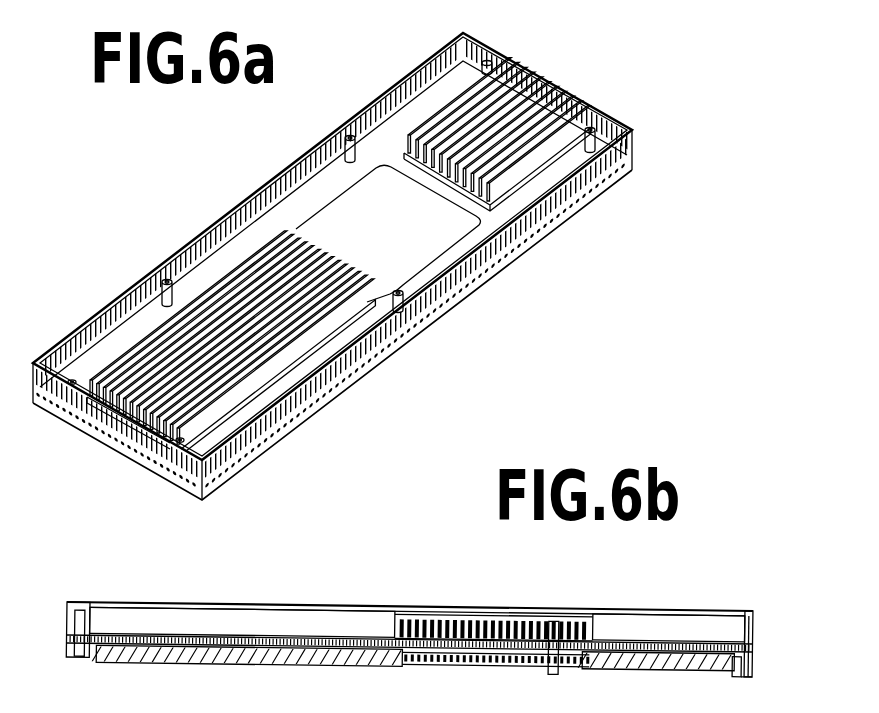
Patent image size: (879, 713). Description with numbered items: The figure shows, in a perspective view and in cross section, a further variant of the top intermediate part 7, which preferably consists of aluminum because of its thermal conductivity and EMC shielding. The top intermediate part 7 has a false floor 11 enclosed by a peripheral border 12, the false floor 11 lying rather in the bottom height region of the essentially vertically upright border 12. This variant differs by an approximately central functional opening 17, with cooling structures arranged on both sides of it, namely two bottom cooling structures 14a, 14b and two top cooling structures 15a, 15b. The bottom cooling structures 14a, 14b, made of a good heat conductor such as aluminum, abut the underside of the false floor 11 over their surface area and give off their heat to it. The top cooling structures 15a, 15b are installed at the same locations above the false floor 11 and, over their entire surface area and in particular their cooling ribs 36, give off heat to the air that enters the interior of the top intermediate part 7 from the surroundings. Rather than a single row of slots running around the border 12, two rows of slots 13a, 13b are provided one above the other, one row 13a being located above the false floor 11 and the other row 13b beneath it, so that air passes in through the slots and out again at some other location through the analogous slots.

In FIG. 6A, the top intermediate part 7 is at (652, 173).
In FIG. 6B, the top intermediate part 7 is at (730, 598).
In FIG. 6A, the false floor 11 is at (330, 348).
In FIG. 6B, the false floor 11 is at (428, 637).
In FIG. 6A, the peripheral border 12 is at (33, 404).
In FIG. 6A, the upper row of slots 13a is at (362, 122).
In FIG. 6B, the upper row of slots 13a is at (483, 620).
In FIG. 6A, the lower row of slots 13b is at (437, 316).
In FIG. 6B, the lower row of slots 13b is at (488, 656).
In FIG. 6B, the bottom cooling structure 14a is at (623, 655).
In FIG. 6B, the bottom cooling structure 14b is at (195, 652).
In FIG. 6A, the top cooling structure 15a is at (440, 122).
In FIG. 6B, the top cooling structure 15a is at (637, 627).
In FIG. 6A, the top cooling structure 15b is at (288, 250).
In FIG. 6B, the top cooling structure 15b is at (155, 618).
In FIG. 6A, the functional opening 17 is at (468, 224).
In FIG. 6A, the cooling ribs 36 is at (548, 108).